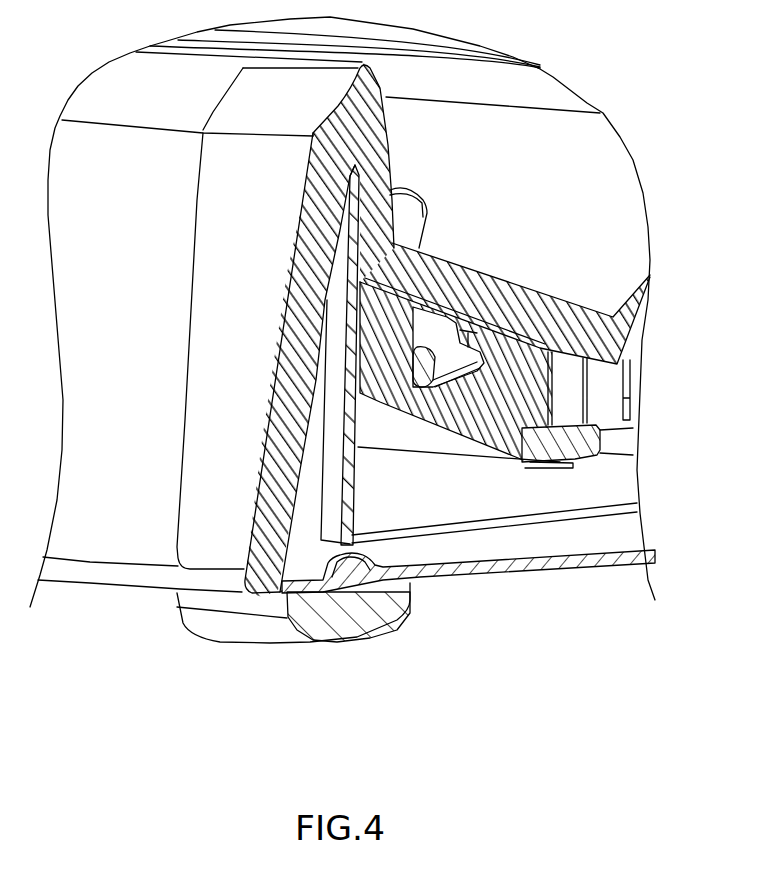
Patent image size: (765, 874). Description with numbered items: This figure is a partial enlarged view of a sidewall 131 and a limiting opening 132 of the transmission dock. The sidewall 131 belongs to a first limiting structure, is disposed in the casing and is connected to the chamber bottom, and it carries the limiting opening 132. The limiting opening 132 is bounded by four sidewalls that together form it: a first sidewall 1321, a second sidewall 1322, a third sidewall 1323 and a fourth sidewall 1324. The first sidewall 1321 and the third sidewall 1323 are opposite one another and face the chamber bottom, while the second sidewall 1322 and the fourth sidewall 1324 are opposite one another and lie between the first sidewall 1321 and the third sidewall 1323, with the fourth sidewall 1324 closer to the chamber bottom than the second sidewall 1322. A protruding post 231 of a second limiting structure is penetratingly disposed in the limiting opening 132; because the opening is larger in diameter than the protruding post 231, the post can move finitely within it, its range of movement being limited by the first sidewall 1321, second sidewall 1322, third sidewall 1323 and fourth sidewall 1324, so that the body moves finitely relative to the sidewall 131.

The sidewall 131 is at (508, 410).
The limiting opening 132 is at (453, 387).
The first sidewall 1321 is at (443, 292).
The second sidewall 1322 is at (440, 350).
The third sidewall 1323 is at (515, 335).
The fourth sidewall 1324 is at (468, 330).
The protruding post 231 is at (444, 365).